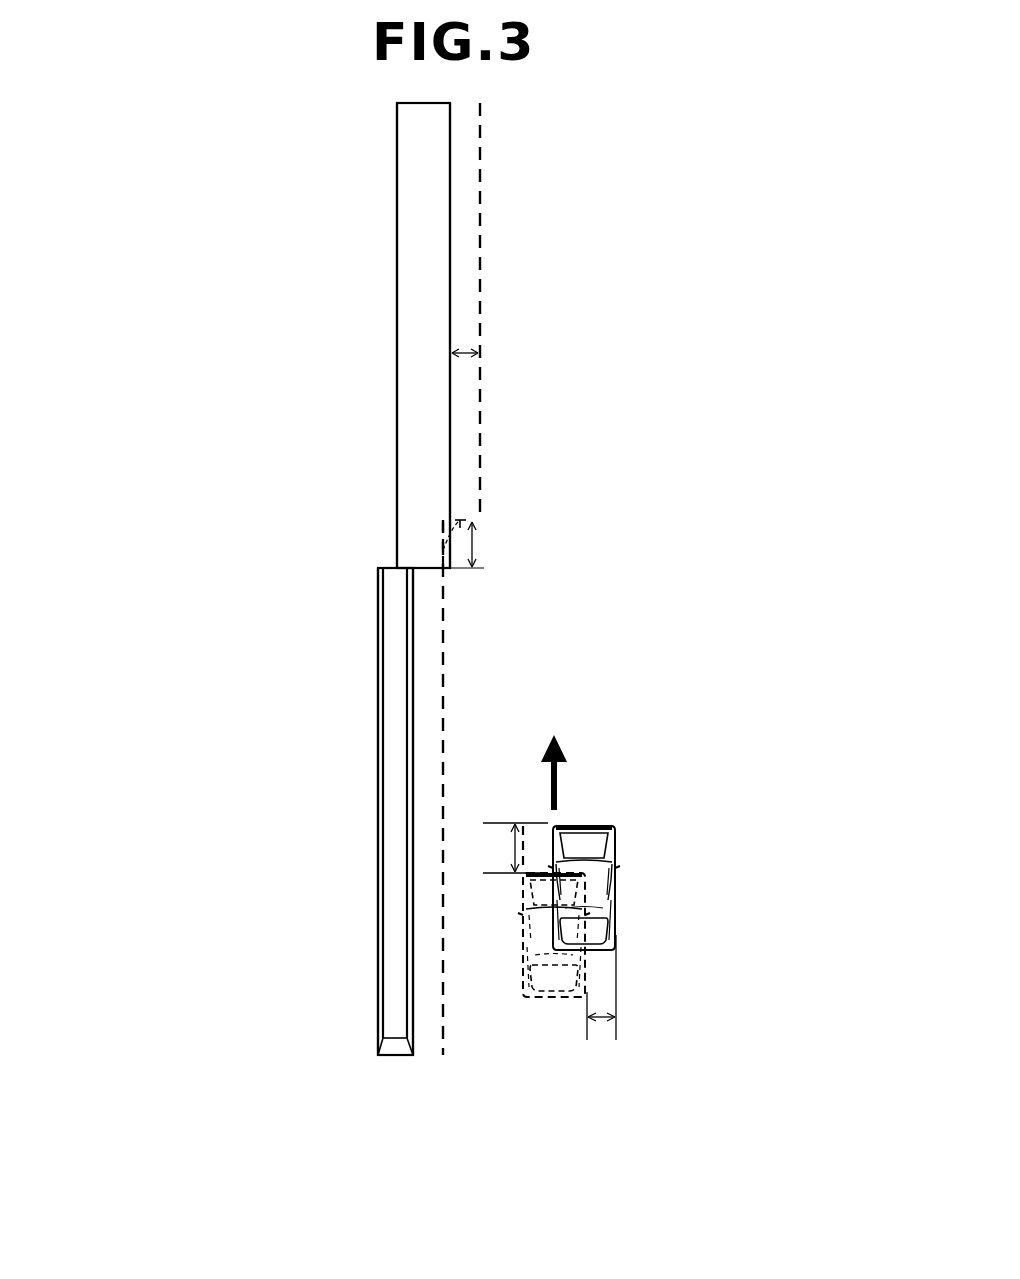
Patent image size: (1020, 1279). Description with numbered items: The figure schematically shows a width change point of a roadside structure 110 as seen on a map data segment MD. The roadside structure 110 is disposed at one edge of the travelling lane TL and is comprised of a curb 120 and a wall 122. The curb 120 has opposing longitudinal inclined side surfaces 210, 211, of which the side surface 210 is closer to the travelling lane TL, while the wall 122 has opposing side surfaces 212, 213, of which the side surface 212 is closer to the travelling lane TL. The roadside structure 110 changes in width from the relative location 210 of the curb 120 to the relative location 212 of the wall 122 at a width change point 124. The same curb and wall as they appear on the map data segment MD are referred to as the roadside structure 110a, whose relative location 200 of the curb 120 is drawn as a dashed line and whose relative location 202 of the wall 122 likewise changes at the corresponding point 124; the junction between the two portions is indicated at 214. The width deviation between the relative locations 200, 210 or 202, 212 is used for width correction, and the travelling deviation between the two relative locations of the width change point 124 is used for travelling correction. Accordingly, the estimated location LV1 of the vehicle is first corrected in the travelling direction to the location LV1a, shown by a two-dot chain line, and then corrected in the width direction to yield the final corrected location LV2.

The roadside structure 110 is at (256, 411).
The roadside structure on the map data segment 110a is at (484, 464).
The curb 120 is at (378, 766).
The wall 122 is at (397, 359).
The width change point 124 is at (446, 549).
The relative location of the curb on the map data segment 200 is at (443, 660).
The relative location of the wall on the map data segment 202 is at (480, 412).
The longitudinal side surface of the curb 210 is at (413, 776).
The longitudinal side surface of the curb 211 is at (378, 935).
The side surface of the wall 212 is at (450, 305).
The side surface of the wall 213 is at (397, 255).
The lane marking connection portion 214 is at (431, 570).
The map data segment MD is at (701, 672).
The estimated location of the vehicle LV1 is at (522, 937).
The corrected location of the vehicle in the travelling direction LV1a is at (525, 826).
The corrected location of the vehicle LV2 is at (617, 898).
The travelling lane TL is at (652, 1012).